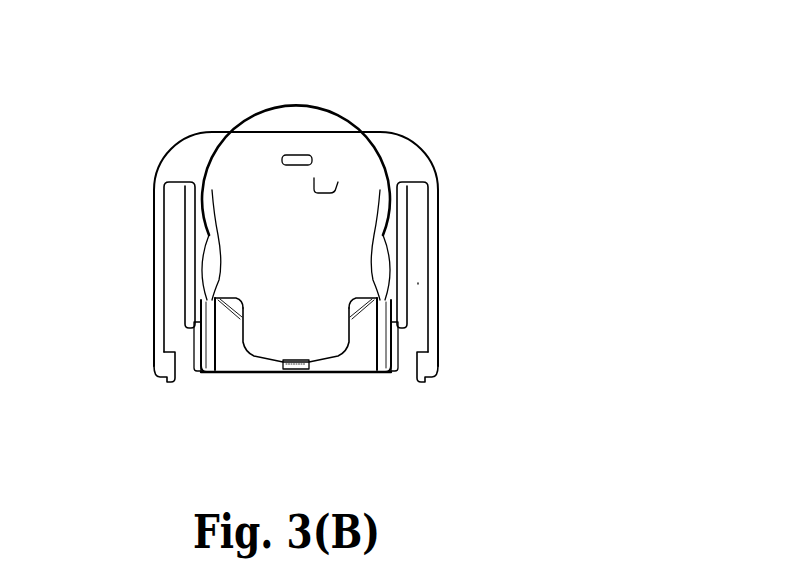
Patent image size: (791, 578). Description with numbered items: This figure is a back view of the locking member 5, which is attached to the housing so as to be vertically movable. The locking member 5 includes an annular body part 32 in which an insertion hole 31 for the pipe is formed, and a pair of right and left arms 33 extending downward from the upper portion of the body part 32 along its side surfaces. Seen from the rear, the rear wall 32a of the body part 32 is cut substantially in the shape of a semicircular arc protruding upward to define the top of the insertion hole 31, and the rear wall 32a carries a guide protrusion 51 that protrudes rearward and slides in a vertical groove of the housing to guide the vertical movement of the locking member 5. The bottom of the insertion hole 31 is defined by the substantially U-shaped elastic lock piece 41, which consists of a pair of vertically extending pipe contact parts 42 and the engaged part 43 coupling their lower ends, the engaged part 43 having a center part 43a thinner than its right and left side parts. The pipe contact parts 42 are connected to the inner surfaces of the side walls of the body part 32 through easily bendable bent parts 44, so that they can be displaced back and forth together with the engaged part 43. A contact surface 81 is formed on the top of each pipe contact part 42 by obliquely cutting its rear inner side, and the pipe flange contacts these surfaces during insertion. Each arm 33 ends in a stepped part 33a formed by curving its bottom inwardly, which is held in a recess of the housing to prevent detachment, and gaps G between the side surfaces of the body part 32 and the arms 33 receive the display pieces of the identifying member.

The locking member 5 is at (421, 94).
The body part 32 is at (225, 126).
The rear wall 32a is at (263, 140).
The arm 33 is at (148, 209).
The stepped part 33a is at (158, 367).
The guide protrusion 51 is at (307, 153).
The insertion hole 31 is at (338, 188).
The bent part 44 is at (298, 229).
The engaged part 43 is at (260, 348).
The center part 43a is at (296, 359).
The contact surface 81 is at (242, 297).
The pipe contact part 42 is at (228, 333).
The elastic lock piece 41 is at (305, 383).
The gap G is at (418, 283).